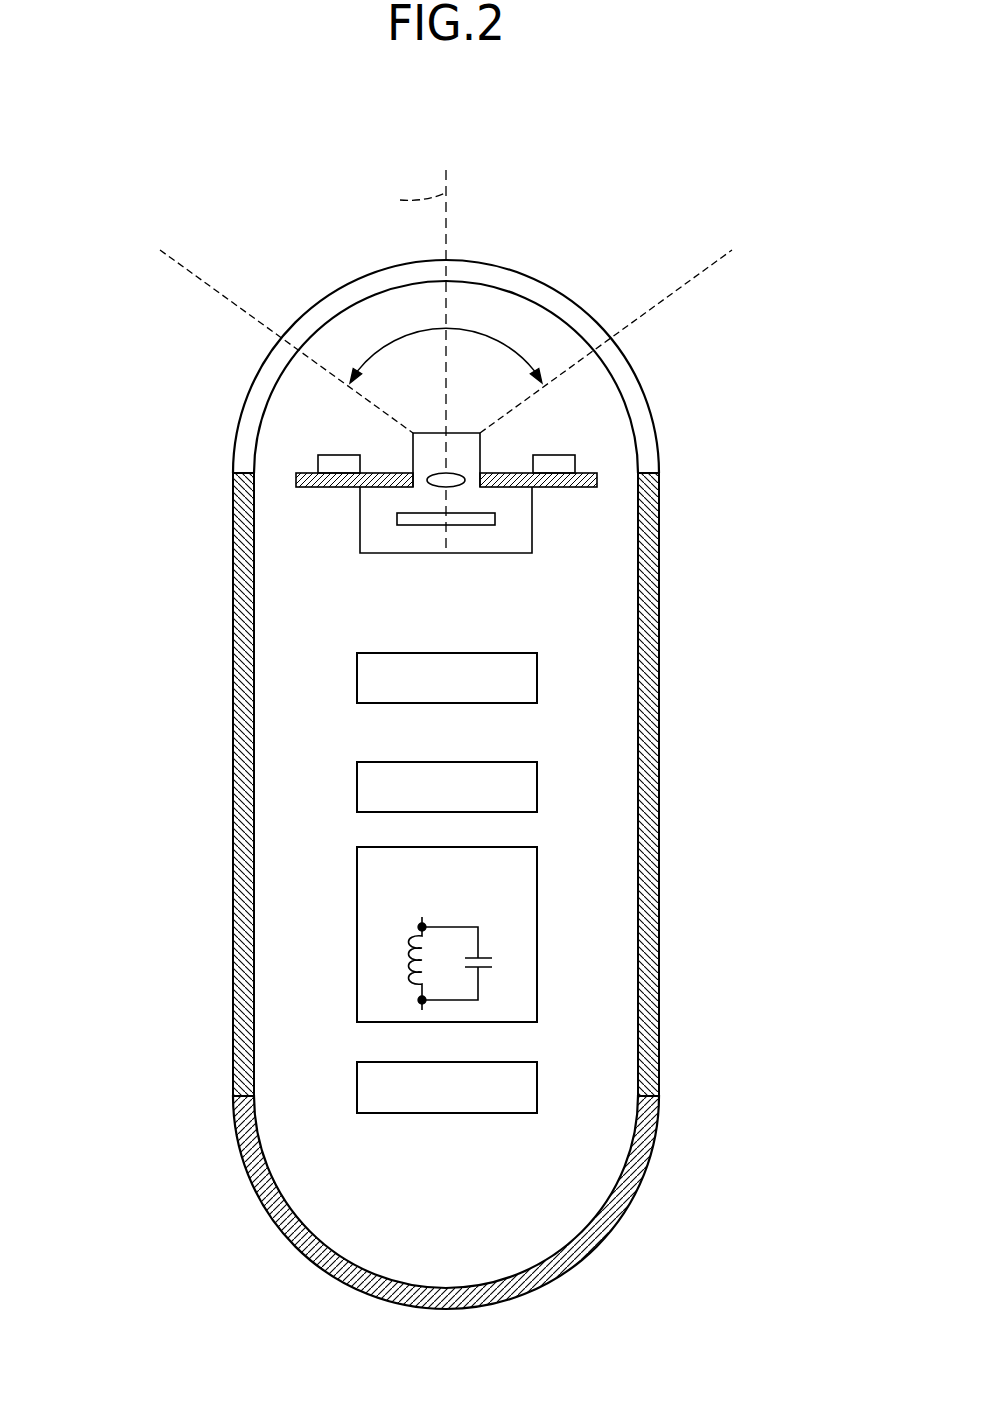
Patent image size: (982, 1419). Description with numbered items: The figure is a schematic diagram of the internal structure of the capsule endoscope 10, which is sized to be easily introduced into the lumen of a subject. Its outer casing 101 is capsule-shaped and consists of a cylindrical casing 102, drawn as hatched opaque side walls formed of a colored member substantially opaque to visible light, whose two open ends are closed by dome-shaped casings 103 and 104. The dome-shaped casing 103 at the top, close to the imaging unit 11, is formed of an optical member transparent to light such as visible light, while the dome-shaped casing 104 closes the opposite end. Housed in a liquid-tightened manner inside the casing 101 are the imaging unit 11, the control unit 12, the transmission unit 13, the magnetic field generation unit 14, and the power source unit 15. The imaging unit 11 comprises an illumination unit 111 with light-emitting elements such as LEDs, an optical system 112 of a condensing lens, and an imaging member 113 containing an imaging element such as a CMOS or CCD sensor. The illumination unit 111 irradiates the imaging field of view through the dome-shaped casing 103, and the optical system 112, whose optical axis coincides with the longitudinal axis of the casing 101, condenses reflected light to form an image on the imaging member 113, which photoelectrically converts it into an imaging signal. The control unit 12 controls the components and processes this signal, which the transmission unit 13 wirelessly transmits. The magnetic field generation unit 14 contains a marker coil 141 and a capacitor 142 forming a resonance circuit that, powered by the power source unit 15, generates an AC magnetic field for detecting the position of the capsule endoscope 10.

The capsule endoscope 10 is at (458, 137).
The imaging unit 11 is at (733, 315).
The illumination unit 111 is at (338, 455).
The optical system 112 is at (455, 474).
The imaging member 113 is at (487, 512).
The casing 101 is at (150, 623).
The cylindrical casing 102 is at (233, 695).
The dome-shaped casing 103 is at (233, 462).
The dome-shaped casing 104 is at (233, 1097).
The control unit 12 is at (478, 653).
The transmission unit 13 is at (475, 738).
The magnetic field generation unit 14 is at (475, 828).
The marker coil 141 is at (412, 960).
The capacitor 142 is at (493, 963).
The power source unit 15 is at (470, 1043).